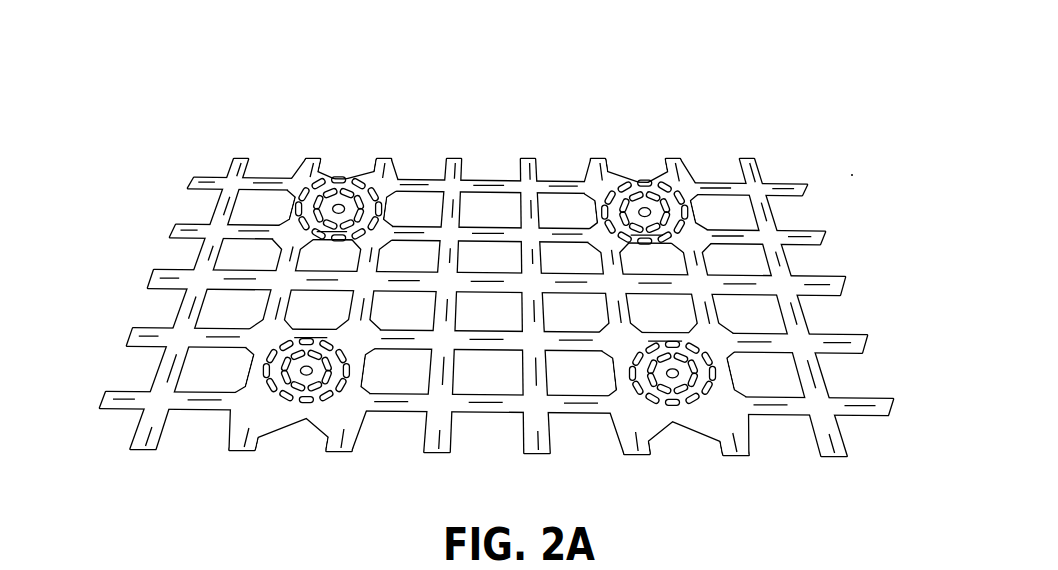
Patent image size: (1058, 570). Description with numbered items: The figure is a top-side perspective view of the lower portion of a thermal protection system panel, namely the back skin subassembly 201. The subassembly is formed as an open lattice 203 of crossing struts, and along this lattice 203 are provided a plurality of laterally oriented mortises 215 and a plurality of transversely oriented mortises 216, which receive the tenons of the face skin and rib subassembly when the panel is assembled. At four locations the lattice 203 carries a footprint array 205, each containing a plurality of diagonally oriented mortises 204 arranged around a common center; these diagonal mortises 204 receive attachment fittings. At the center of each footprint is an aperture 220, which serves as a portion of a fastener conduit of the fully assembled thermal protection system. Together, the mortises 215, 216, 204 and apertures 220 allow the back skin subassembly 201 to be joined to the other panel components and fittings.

The back skin subassembly 201 is at (631, 71).
The lattice 203 is at (188, 185).
The diagonally oriented mortises 204 is at (591, 166).
The footprint array 205 is at (693, 162).
The laterally oriented mortises 215 is at (108, 405).
The transversely oriented mortises 216 is at (246, 158).
The aperture 220 is at (304, 375).